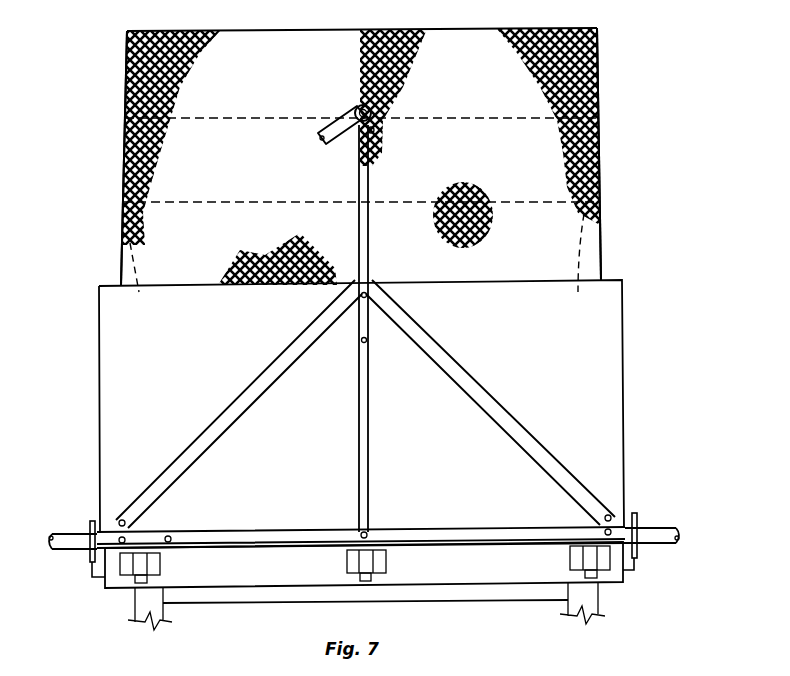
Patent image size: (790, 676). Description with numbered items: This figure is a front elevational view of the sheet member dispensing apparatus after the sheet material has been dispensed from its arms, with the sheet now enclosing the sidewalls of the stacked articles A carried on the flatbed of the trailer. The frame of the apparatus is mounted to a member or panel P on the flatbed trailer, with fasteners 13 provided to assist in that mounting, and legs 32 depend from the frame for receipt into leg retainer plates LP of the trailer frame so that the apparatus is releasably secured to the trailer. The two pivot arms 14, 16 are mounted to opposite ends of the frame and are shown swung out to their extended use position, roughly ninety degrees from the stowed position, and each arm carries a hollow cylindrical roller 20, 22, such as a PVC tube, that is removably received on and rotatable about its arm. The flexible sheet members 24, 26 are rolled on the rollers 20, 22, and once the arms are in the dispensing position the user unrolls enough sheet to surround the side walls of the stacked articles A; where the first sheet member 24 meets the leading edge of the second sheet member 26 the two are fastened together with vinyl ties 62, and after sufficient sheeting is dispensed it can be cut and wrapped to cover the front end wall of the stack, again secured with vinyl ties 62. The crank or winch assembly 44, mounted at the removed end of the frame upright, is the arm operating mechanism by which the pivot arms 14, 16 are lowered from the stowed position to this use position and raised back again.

The fasteners 13 is at (367, 342).
The pivot arm 14 is at (653, 523).
The pivot arm 16 is at (72, 530).
The cylindrical roller 20 is at (653, 538).
The cylindrical roller 22 is at (72, 548).
The flexible sheet member 24 is at (600, 143).
The flexible sheet member 26 is at (122, 143).
The legs 32 is at (600, 573).
The crank or winch assembly 44 is at (355, 108).
The vinyl ties 62 is at (357, 78).
The stacked articles A is at (564, 223).
The panel P is at (562, 360).
The leg retainer plates LP is at (570, 557).